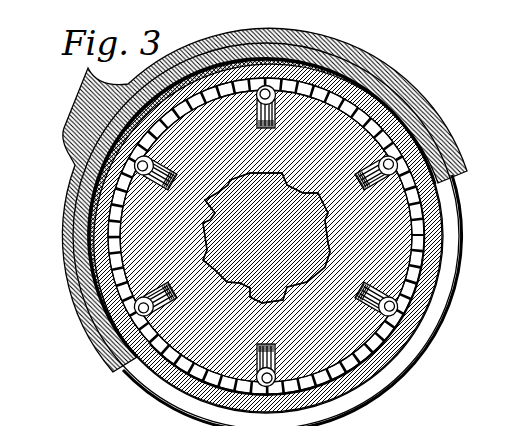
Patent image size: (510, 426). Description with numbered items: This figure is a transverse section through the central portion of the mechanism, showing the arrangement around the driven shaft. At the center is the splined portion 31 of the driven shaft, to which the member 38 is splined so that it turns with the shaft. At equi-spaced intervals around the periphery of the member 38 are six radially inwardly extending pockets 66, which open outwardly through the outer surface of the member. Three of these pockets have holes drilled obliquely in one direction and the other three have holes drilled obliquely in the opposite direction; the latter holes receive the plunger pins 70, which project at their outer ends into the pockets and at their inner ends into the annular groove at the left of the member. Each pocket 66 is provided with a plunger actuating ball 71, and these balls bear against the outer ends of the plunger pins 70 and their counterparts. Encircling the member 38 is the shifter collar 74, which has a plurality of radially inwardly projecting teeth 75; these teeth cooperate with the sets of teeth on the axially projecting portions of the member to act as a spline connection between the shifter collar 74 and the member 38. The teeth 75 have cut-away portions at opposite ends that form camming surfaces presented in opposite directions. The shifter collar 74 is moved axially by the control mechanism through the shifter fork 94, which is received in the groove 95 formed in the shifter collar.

The shifter fork 94 is at (366, 55).
The groove 95 is at (450, 258).
The pockets 66 is at (188, 384).
The plunger actuating ball 71 is at (424, 186).
The plunger pins 70 is at (428, 210).
The member 38 is at (362, 330).
The teeth 75 is at (345, 107).
The splined portion 31 is at (365, 350).
The shifter collar 74 is at (422, 293).